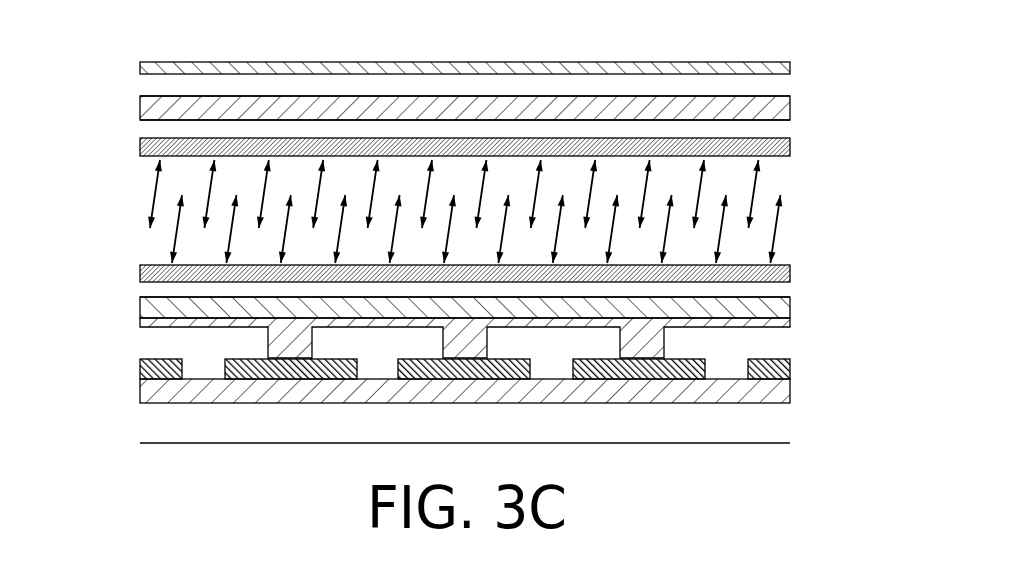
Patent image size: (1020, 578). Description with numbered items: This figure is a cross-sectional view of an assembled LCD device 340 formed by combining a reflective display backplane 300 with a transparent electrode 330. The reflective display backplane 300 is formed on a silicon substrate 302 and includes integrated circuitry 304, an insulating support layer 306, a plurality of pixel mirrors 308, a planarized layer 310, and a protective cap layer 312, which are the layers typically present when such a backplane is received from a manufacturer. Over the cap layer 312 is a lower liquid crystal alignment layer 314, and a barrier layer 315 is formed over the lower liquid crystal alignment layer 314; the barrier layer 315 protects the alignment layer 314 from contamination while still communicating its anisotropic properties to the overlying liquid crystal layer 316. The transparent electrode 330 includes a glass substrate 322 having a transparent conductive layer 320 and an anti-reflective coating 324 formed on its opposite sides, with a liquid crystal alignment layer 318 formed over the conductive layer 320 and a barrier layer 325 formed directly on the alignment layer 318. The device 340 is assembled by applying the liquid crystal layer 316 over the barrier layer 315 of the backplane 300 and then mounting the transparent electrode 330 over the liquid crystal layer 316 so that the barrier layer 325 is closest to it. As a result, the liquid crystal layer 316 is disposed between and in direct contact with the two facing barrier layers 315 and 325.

The reflective display backplane 300 is at (780, 463).
The silicon substrate 302 is at (780, 420).
The integrated circuitry 304 is at (140, 394).
The insulating support layer 306 is at (787, 370).
The pixel mirrors 308 is at (148, 348).
The planarized layer 310 is at (783, 323).
The protective cap layer 312 is at (140, 312).
The lower liquid crystal alignment layer 314 is at (782, 288).
The barrier layer 315 is at (140, 272).
The liquid crystal layer 316 is at (147, 212).
The liquid crystal alignment layer 318 is at (786, 124).
The transparent conductive layer 320 is at (140, 107).
The glass substrate 322 is at (785, 83).
The anti-reflective coating 324 is at (140, 68).
The barrier layer 325 is at (140, 149).
The transparent electrode 330 is at (750, 43).
The assembled LCD device 340 is at (173, 470).